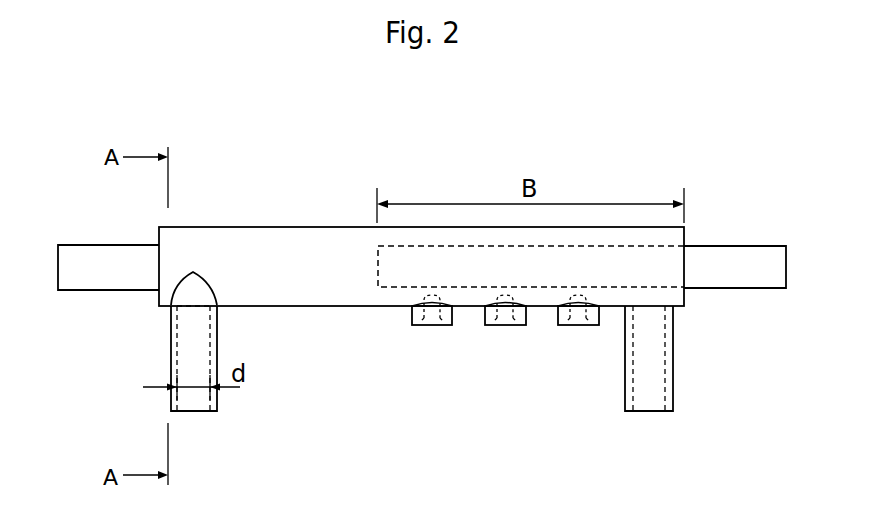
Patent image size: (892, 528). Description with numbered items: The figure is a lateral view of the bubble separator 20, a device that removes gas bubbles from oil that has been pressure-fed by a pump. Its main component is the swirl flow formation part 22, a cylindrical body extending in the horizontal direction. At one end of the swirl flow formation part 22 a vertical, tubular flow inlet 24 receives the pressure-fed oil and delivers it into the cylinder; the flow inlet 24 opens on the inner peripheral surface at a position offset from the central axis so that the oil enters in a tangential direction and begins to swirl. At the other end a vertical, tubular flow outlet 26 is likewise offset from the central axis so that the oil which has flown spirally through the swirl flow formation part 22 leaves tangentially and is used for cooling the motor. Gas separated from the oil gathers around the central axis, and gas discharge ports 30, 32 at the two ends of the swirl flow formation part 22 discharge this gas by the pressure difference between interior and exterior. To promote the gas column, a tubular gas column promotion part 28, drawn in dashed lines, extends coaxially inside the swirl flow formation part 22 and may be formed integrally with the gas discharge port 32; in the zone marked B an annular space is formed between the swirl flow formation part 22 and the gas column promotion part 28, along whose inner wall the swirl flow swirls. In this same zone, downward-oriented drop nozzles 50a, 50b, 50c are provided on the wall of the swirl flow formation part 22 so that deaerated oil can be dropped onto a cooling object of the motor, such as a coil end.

The bubble separator 20 is at (411, 156).
The swirl flow formation part 22 is at (262, 227).
The flow inlet 24 is at (171, 345).
The flow outlet 26 is at (673, 358).
The gas column promotion part 28 is at (378, 243).
The gas discharge port 30 is at (90, 290).
The gas discharge port 32 is at (733, 257).
The drop nozzle 50a is at (420, 327).
The drop nozzle 50b is at (495, 327).
The drop nozzle 50c is at (568, 327).